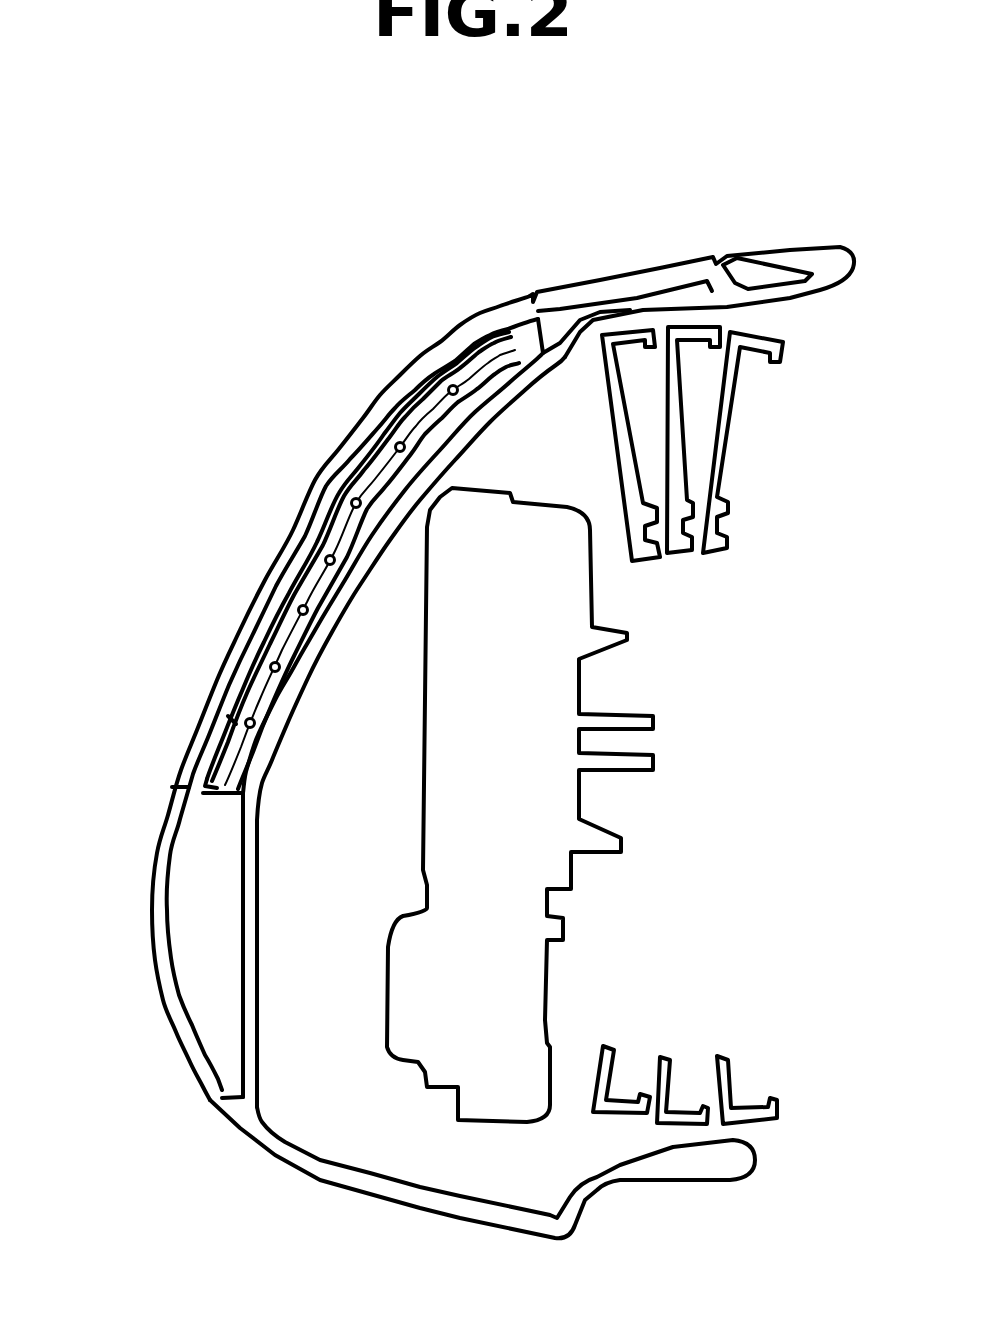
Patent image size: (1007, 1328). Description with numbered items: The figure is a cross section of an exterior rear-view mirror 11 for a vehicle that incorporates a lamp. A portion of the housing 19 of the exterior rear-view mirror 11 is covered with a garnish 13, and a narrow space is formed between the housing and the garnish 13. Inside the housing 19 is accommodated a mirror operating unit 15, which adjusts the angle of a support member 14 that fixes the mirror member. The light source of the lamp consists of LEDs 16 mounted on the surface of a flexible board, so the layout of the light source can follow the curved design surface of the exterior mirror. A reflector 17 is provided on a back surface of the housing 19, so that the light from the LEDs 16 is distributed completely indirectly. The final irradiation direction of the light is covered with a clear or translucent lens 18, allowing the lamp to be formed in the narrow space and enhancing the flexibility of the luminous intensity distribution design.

The exterior rear-view mirror 11 is at (377, 313).
The garnish 13 is at (152, 920).
The support member 14 is at (612, 368).
The mirror operating unit 15 is at (516, 1078).
The LEDs 16 is at (295, 608).
The reflector 17 is at (357, 542).
The lens 18 is at (232, 720).
The housing 19 is at (265, 1160).